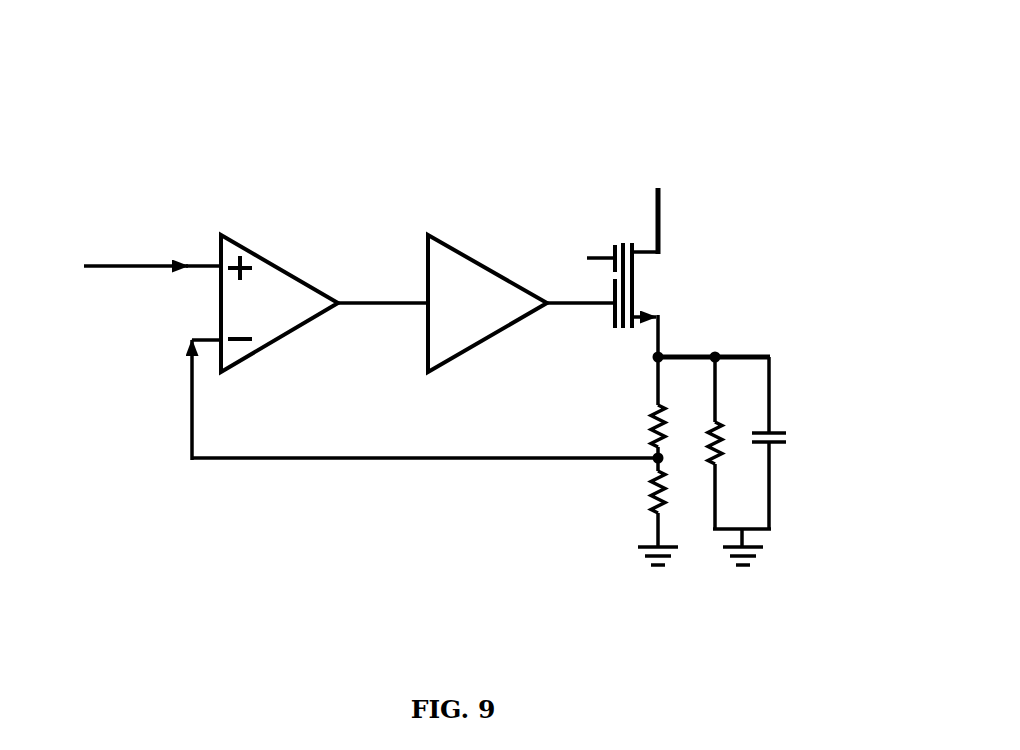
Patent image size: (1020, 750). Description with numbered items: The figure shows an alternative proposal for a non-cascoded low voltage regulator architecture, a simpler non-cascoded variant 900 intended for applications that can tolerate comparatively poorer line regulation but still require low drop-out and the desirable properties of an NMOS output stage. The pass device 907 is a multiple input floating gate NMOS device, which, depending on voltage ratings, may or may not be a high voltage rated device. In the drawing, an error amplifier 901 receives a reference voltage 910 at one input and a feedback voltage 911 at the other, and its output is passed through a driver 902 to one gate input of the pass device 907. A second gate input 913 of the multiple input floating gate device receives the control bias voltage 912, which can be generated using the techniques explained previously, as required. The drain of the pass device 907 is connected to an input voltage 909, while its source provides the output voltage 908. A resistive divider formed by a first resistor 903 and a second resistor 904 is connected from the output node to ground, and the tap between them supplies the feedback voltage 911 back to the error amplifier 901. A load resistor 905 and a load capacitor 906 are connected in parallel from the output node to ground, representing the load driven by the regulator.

The non-cascoded variant 900 is at (739, 150).
The error amplifier EA 901 is at (278, 259).
The driver 902 is at (470, 245).
The feedback resistor R2 903 is at (615, 408).
The feedback resistor R1 904 is at (617, 497).
The load resistor RL 905 is at (707, 470).
The load capacitor CL 906 is at (800, 410).
The pass device 907 is at (673, 287).
The output voltage node VOUT 908 is at (765, 320).
The input voltage VIN 909 is at (651, 145).
The reference voltage VREF 910 is at (60, 238).
The feedback voltage VFB 911 is at (362, 473).
The control bias voltage 912 is at (570, 240).
The second gate of pass transistor 913 is at (624, 240).